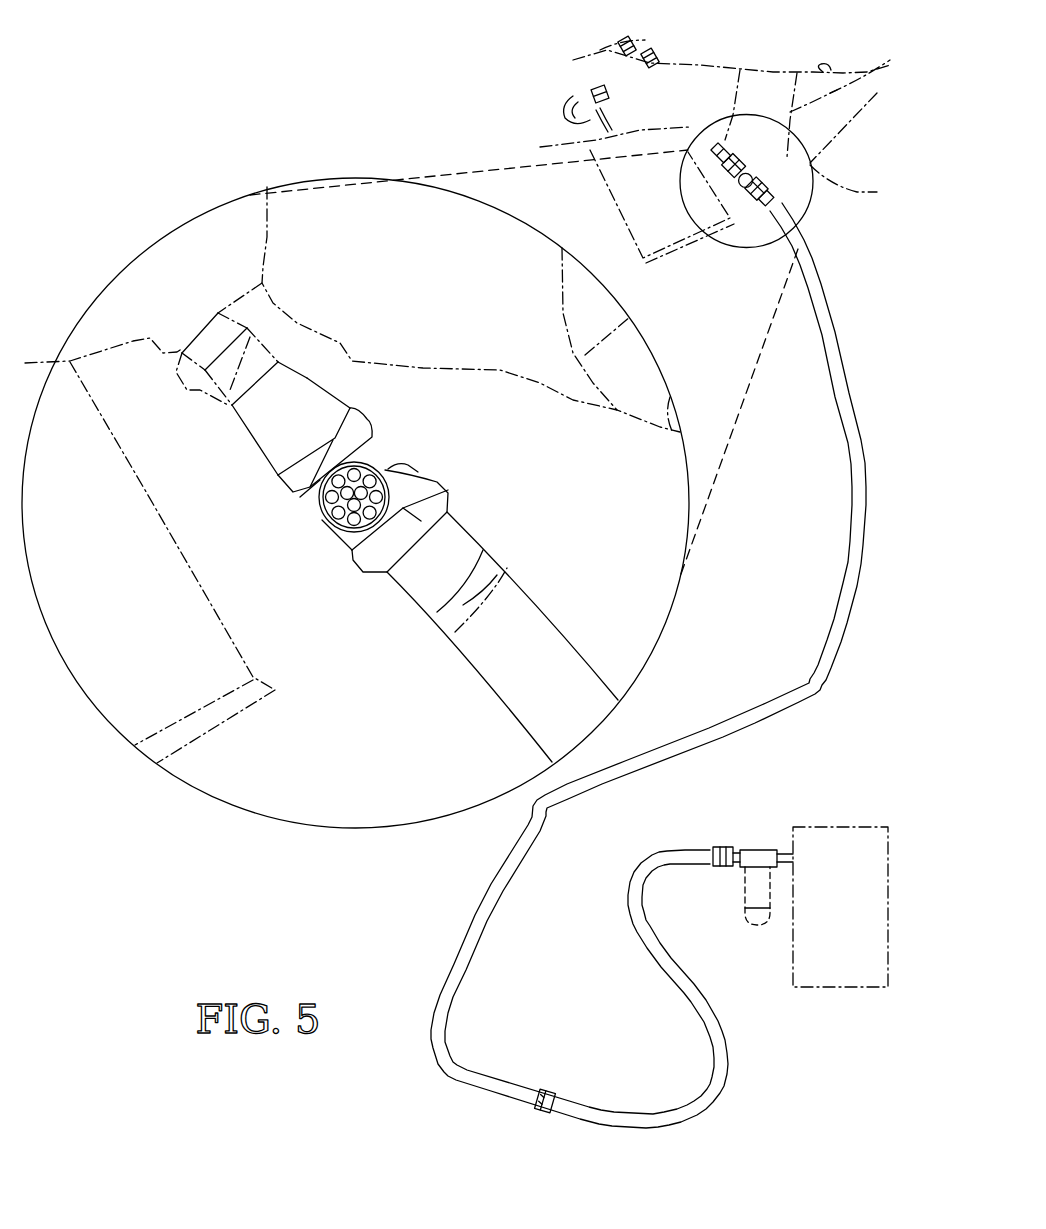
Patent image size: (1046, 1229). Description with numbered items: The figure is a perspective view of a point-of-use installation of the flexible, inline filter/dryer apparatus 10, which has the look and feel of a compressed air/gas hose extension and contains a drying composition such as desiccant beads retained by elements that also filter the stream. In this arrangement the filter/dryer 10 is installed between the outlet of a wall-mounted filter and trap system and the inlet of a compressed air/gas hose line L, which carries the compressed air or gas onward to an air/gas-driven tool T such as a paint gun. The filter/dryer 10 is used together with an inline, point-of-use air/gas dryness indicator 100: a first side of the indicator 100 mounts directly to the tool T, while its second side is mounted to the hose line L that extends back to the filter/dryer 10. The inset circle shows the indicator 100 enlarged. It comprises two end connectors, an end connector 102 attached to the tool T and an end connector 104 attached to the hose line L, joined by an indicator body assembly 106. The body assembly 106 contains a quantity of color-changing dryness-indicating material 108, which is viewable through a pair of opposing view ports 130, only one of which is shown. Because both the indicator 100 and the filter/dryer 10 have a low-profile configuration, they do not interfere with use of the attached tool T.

The filter/dryer apparatus 10 is at (700, 1047).
The air/gas dryness indicator 100 is at (477, 457).
The end connector 102 is at (262, 450).
The end connector 104 is at (407, 592).
The indicator body assembly 106 is at (325, 543).
The color-changing dryness-indicating material 108 is at (322, 518).
The view port 130 is at (405, 466).
The air/gas-driven tool T is at (568, 72).
The compressed air/gas hose line L is at (829, 608).